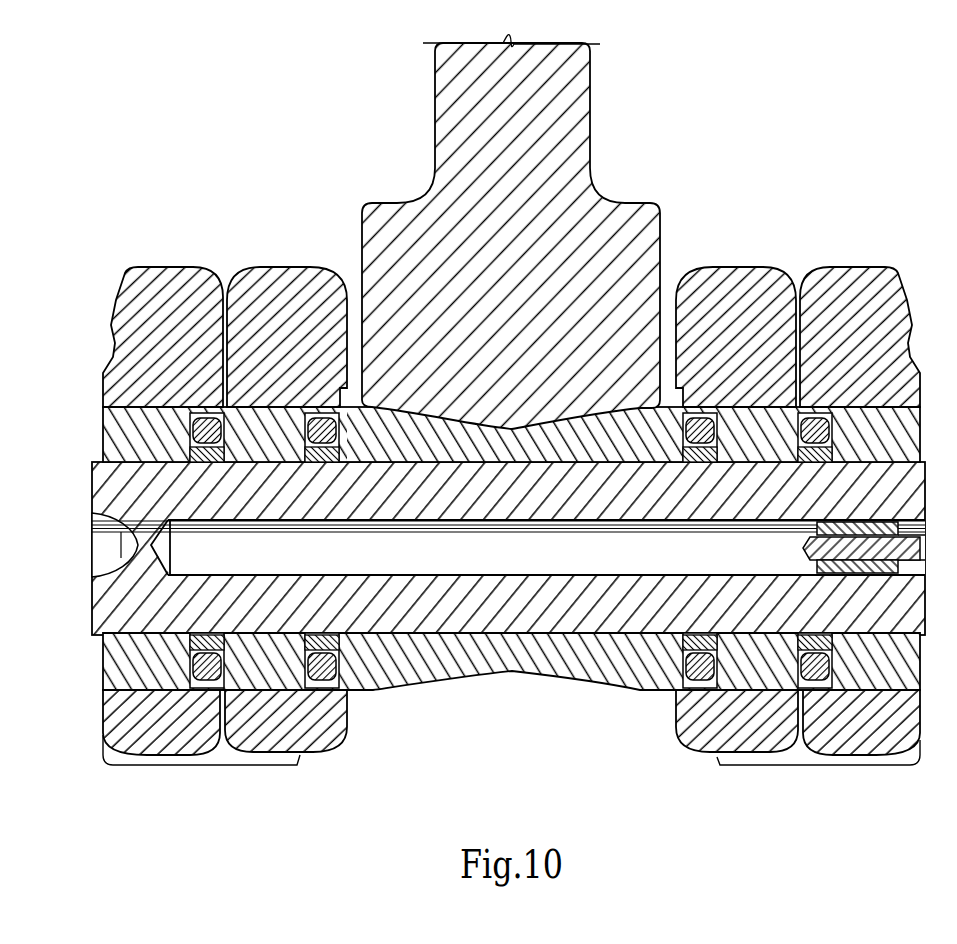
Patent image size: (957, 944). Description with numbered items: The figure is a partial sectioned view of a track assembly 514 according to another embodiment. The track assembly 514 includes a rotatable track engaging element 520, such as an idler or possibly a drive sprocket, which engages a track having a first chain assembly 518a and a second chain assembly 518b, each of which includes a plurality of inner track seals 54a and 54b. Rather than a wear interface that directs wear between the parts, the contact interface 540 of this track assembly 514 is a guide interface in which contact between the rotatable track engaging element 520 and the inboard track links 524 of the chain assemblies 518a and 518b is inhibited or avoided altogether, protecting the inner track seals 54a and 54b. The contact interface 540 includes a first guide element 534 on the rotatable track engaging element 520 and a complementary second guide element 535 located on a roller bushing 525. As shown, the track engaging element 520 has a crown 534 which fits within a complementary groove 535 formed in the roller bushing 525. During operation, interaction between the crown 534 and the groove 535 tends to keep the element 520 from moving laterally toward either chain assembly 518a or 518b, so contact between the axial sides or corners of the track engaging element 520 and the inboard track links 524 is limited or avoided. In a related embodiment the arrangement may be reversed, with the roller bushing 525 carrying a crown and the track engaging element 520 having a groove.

The track assembly 514 is at (508, 400).
The rotatable track engaging element 520 is at (555, 126).
The first chain assembly 518a is at (224, 260).
The second chain assembly 518b is at (806, 258).
The inboard track links 524 is at (300, 278).
The contact interface 540 is at (472, 446).
The first guide element (crown) 534 is at (513, 445).
The inner track seals 54a is at (318, 420).
The inner track seals 54b is at (702, 420).
The second guide element (groove) 535 is at (512, 682).
The roller bushing 525 is at (362, 670).